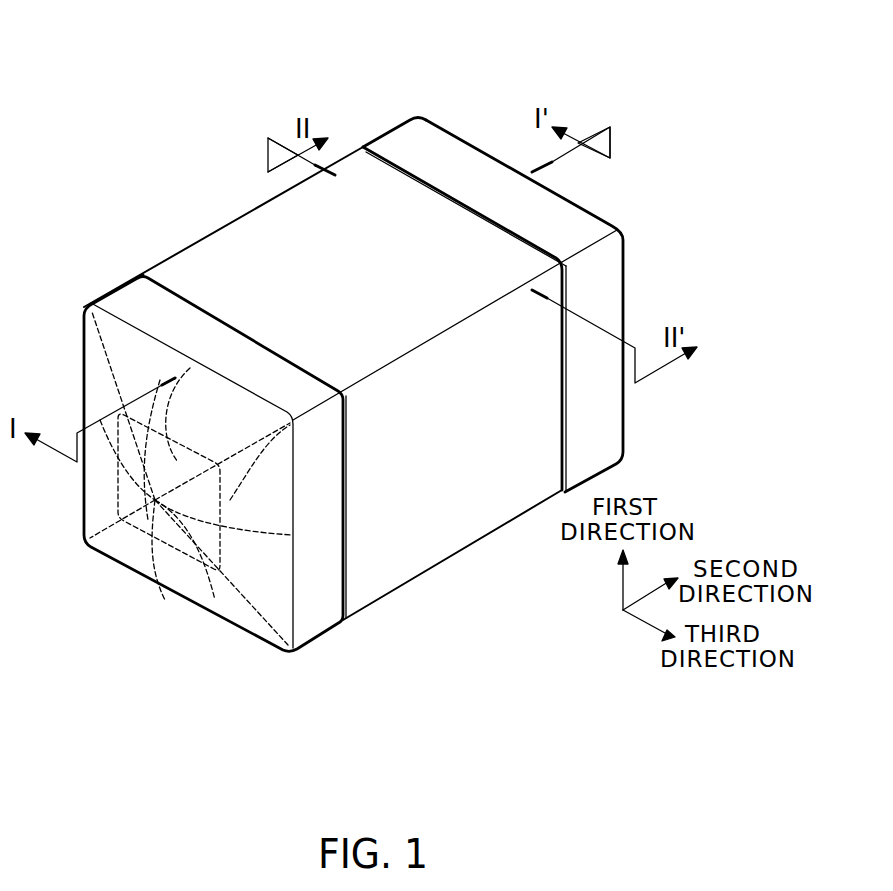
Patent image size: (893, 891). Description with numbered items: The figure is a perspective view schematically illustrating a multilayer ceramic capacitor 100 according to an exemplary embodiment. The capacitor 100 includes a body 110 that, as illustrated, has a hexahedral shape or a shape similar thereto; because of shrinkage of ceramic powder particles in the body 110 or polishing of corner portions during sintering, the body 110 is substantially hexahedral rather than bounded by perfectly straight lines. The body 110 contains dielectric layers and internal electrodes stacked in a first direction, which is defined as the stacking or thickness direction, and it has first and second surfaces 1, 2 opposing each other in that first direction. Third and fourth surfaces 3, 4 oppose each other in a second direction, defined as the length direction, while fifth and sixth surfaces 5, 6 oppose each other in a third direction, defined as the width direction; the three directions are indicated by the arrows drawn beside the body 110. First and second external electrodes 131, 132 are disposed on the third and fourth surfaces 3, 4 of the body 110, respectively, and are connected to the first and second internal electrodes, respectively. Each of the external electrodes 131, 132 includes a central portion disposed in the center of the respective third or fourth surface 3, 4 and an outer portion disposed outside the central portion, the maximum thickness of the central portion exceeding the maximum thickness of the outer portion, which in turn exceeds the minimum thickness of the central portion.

The multilayer ceramic capacitor 100 is at (185, 43).
The body 110 is at (263, 238).
The first surface 1 is at (389, 591).
The second surface 2 is at (227, 268).
The third surface 3 is at (157, 553).
The fourth surface 4 is at (468, 140).
The fifth surface 5 is at (440, 475).
The sixth surface 6 is at (188, 254).
The first external electrode 131 is at (123, 310).
The second external electrode 132 is at (407, 155).